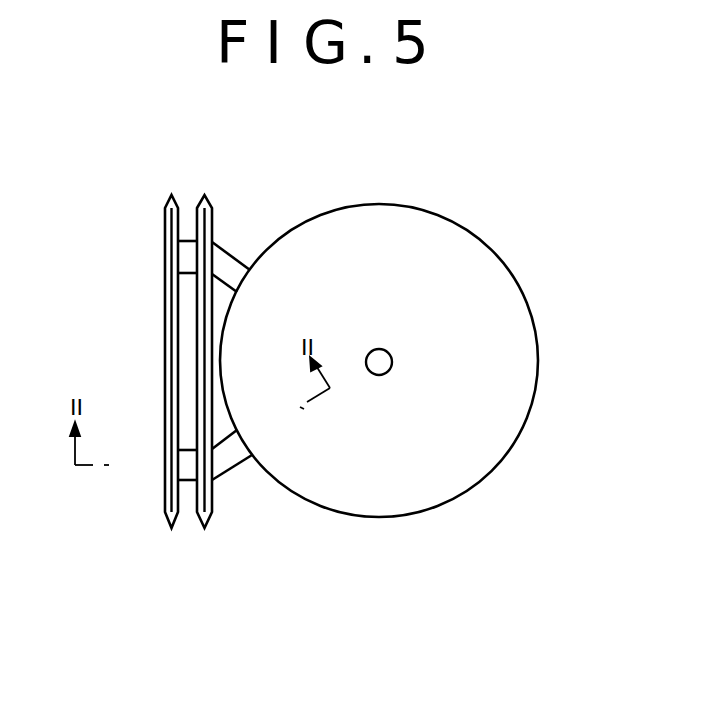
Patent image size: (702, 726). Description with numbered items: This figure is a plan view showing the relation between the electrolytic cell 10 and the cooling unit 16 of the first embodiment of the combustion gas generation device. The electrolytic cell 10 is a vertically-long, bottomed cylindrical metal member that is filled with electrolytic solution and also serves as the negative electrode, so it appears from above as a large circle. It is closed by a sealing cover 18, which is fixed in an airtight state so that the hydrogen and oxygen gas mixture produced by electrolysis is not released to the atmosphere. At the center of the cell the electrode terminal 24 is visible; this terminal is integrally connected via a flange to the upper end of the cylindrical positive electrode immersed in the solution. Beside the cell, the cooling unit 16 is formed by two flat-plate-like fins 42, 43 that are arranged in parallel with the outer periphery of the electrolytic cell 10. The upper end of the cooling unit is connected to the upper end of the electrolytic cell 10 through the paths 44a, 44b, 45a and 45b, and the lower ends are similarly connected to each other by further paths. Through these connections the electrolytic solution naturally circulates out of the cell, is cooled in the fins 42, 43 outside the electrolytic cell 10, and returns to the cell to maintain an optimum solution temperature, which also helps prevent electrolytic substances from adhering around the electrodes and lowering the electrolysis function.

The electrolytic cell 10 is at (482, 240).
The cooling unit 16 is at (150, 307).
The sealing cover 18 is at (470, 315).
The electrode terminal 24 is at (388, 364).
The flat-plate-like fin 42 is at (212, 220).
The flat-plate-like fin 43 is at (167, 495).
The path 44a is at (235, 462).
The path 44b is at (230, 255).
The path 45a is at (192, 452).
The path 45b is at (188, 248).